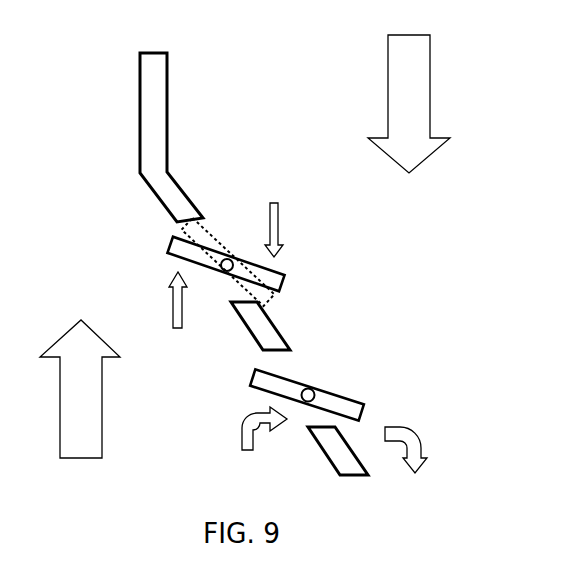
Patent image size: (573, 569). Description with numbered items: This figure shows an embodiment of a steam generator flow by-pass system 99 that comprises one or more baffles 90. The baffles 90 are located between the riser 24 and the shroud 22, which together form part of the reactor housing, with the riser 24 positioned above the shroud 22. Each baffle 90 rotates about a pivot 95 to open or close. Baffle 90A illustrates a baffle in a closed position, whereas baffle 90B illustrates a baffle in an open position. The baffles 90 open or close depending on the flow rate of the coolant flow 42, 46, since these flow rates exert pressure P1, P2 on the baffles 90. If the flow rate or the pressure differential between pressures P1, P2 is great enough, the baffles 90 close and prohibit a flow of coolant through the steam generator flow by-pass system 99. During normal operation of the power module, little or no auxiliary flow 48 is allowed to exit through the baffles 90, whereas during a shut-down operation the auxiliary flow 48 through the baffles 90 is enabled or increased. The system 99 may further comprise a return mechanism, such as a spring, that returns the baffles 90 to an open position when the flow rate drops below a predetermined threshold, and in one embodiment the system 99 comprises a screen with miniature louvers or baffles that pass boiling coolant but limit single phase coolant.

The riser 24 is at (130, 82).
The coolant flow 42 is at (380, 97).
The coolant flow 46 is at (108, 402).
The auxiliary flow 48 is at (242, 417).
The baffle 90 is at (297, 378).
The baffle in closed position 90A is at (211, 243).
The baffle in open position 90B is at (160, 247).
The pivot 95 is at (222, 290).
The shroud 22 is at (283, 325).
The steam generator flow by-pass system 99 is at (360, 247).
The pressure P1 is at (163, 298).
The pressure P2 is at (282, 225).